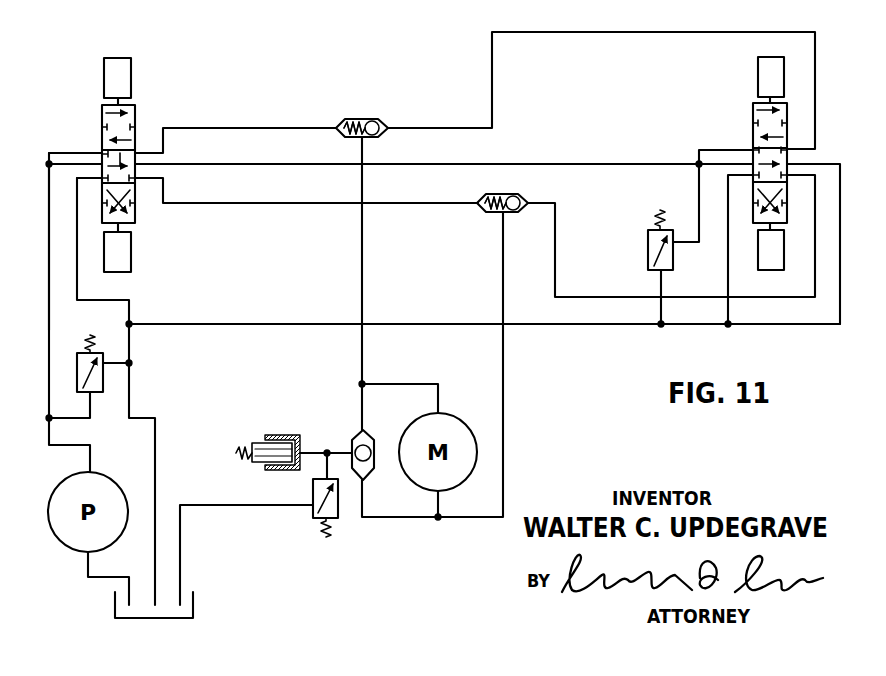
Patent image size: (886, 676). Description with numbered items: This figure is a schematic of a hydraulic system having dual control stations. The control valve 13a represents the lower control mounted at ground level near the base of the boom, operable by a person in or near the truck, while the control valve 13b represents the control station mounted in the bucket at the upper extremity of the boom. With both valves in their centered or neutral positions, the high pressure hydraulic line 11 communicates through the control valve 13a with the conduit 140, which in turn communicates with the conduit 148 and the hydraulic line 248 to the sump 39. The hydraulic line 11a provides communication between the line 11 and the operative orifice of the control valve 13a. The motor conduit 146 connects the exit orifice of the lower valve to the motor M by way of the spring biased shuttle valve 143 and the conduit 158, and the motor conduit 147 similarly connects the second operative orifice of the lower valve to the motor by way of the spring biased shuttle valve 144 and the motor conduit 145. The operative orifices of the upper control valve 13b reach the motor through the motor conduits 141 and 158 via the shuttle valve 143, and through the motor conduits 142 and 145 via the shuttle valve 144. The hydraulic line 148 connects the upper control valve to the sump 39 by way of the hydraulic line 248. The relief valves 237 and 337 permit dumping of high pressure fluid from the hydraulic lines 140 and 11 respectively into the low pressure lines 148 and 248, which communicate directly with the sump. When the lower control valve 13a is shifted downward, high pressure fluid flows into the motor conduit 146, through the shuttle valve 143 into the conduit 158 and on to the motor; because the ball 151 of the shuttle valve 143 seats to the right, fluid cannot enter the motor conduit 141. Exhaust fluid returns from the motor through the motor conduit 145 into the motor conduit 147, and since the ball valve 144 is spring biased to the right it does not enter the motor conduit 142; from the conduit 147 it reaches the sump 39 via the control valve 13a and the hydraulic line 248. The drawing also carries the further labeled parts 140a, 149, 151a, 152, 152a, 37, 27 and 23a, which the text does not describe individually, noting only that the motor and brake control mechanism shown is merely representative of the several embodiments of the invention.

The high pressure hydraulic line 11 is at (50, 327).
The hydraulic line 11a is at (78, 152).
The control valve 13a is at (135, 115).
The control valve 13b is at (752, 105).
The motor conduit 146 is at (220, 128).
The motor conduit 147 is at (272, 205).
The conduit 140 is at (528, 164).
The conduit branch 140a is at (724, 150).
The motor conduit 141 is at (492, 88).
The motor conduit 142 is at (627, 298).
The spring biased shuttle valve 143 is at (380, 119).
The spring biased shuttle valve 144 is at (520, 195).
The motor conduit 145 is at (504, 418).
The hydraulic line 148 is at (273, 323).
The conduit 149 is at (243, 507).
The ball 151 is at (378, 136).
The check valve ball 151a is at (510, 214).
The check valve spring 152 is at (348, 120).
The check valve spring 152a is at (488, 215).
The conduit 158 is at (361, 273).
The relief valve 237 is at (647, 250).
The relief valve 337 is at (93, 362).
The relief valve 37 is at (343, 515).
The piston cylinder 27 is at (270, 437).
The check valve 23a is at (347, 437).
The hydraulic line 248 is at (165, 423).
The sump 39 is at (196, 603).